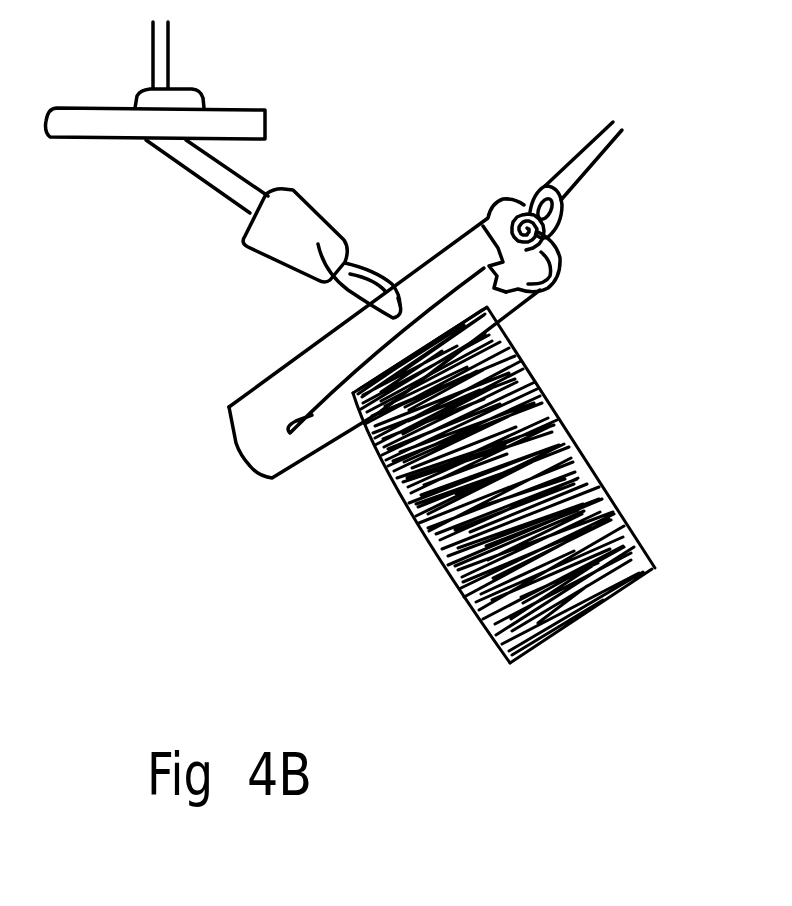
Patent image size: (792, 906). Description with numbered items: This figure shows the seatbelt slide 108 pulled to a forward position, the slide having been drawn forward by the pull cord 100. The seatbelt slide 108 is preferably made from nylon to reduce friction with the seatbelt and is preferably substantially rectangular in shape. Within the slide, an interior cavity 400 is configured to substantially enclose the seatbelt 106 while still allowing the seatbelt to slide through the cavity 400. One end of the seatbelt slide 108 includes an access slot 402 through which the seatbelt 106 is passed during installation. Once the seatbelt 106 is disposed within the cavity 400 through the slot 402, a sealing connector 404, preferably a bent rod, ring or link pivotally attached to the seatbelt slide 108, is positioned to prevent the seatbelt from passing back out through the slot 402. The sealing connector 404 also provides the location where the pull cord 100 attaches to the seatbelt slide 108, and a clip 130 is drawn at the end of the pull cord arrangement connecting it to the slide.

The pull cord 100 is at (567, 160).
The seatbelt 106 is at (602, 477).
The seatbelt slide 108 is at (250, 362).
The clip 130 is at (300, 220).
The interior cavity 400 is at (291, 424).
The access slot 402 is at (545, 290).
The sealing connector 404 is at (497, 212).